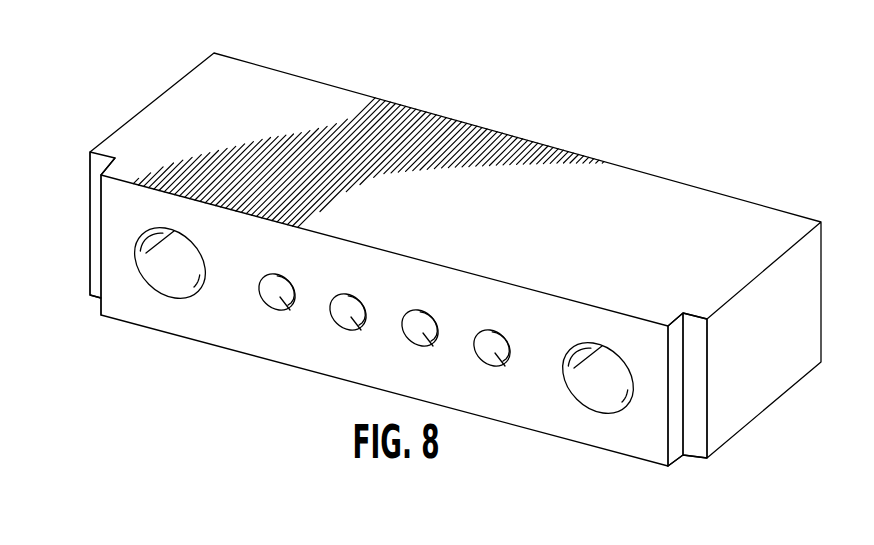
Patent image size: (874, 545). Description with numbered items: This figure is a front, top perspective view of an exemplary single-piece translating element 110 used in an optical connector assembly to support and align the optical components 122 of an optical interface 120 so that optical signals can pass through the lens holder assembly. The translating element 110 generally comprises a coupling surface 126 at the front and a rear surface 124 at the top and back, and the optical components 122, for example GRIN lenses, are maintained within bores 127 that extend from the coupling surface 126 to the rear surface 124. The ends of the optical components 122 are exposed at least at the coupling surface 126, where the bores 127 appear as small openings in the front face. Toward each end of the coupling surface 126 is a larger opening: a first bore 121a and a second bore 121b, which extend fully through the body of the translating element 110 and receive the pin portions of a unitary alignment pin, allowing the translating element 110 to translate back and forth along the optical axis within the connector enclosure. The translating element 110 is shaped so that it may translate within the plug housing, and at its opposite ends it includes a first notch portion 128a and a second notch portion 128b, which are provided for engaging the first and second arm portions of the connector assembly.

The translating element 110 is at (618, 192).
The optical interface 120 is at (379, 305).
The first bore 121a is at (572, 353).
The second bore 121b is at (139, 245).
The optical components 122 is at (289, 308).
The rear surface 124 is at (304, 79).
The coupling surface 126 is at (235, 337).
The bores 127 is at (338, 293).
The first notch portion 128a is at (683, 457).
The second notch portion 128b is at (92, 301).